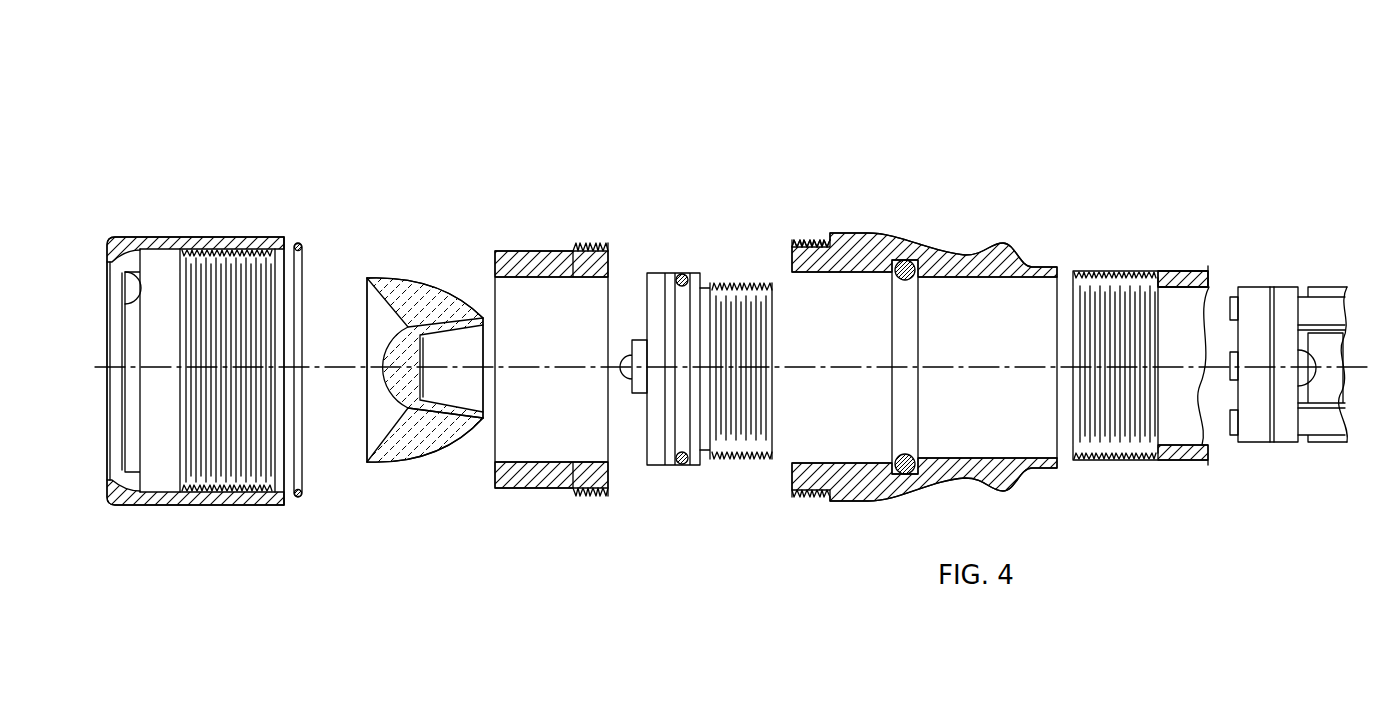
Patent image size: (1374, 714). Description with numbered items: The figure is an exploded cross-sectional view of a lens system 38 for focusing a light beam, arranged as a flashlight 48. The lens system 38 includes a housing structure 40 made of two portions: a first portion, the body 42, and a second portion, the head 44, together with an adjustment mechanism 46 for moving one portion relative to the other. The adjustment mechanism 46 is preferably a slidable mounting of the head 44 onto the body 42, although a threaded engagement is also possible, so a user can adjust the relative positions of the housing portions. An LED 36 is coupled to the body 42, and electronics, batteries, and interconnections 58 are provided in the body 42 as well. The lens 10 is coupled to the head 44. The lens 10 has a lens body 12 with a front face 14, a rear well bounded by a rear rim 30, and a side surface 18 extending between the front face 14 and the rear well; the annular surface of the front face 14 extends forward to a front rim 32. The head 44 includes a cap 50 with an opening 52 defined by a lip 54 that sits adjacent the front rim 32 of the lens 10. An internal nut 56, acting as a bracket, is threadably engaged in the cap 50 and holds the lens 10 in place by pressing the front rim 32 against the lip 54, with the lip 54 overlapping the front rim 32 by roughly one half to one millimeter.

The lens 10 is at (406, 266).
The lens body 12 is at (420, 448).
The front face 14 is at (358, 434).
The side surface 18 is at (449, 446).
The rear rim 30 is at (487, 317).
The front rim 32 is at (367, 278).
The LED 36 is at (637, 340).
The lens system 38 is at (283, 122).
The housing structure 40 is at (976, 199).
The body 42 is at (1178, 270).
The head 44 is at (828, 224).
The adjustment mechanism 46 is at (694, 371).
The flashlight 48 is at (1180, 474).
The cap 50 is at (146, 236).
The opening 52 is at (101, 404).
The lip 54 is at (141, 285).
The internal nut 56 is at (545, 489).
The electronics, batteries, and interconnections 58 is at (1285, 286).